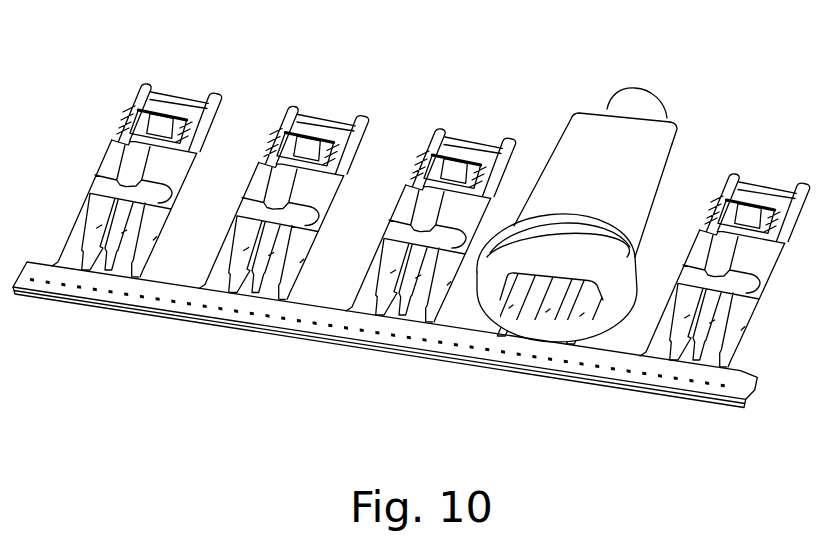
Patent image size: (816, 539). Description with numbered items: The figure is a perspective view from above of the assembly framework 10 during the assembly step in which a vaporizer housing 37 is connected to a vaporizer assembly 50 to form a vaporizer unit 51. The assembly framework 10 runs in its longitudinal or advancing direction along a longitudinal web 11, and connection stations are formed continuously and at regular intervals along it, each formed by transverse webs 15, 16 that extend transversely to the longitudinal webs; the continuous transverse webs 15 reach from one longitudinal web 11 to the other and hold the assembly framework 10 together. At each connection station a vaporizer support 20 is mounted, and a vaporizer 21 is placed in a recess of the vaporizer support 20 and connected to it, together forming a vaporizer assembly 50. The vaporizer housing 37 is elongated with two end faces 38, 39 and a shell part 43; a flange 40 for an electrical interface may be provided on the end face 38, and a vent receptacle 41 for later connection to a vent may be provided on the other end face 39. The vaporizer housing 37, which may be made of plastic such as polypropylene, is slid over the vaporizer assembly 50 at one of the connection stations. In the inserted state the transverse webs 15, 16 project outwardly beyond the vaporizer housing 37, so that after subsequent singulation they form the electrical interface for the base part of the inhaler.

The assembly framework 10 is at (289, 343).
The longitudinal web 11 is at (557, 380).
The transverse web 15 is at (500, 313).
The transverse web 16 is at (540, 322).
The vaporizer support 20 is at (407, 205).
The vaporizer 21 is at (305, 103).
The vaporizer housing 37 is at (558, 137).
The end face 38 is at (614, 315).
The end face 39 is at (670, 125).
The flange 40 is at (517, 302).
The vent receptacle 41 is at (638, 88).
The shell part 43 is at (673, 170).
The vaporizer assembly 50 is at (387, 119).
The vaporizer unit 51 is at (595, 108).